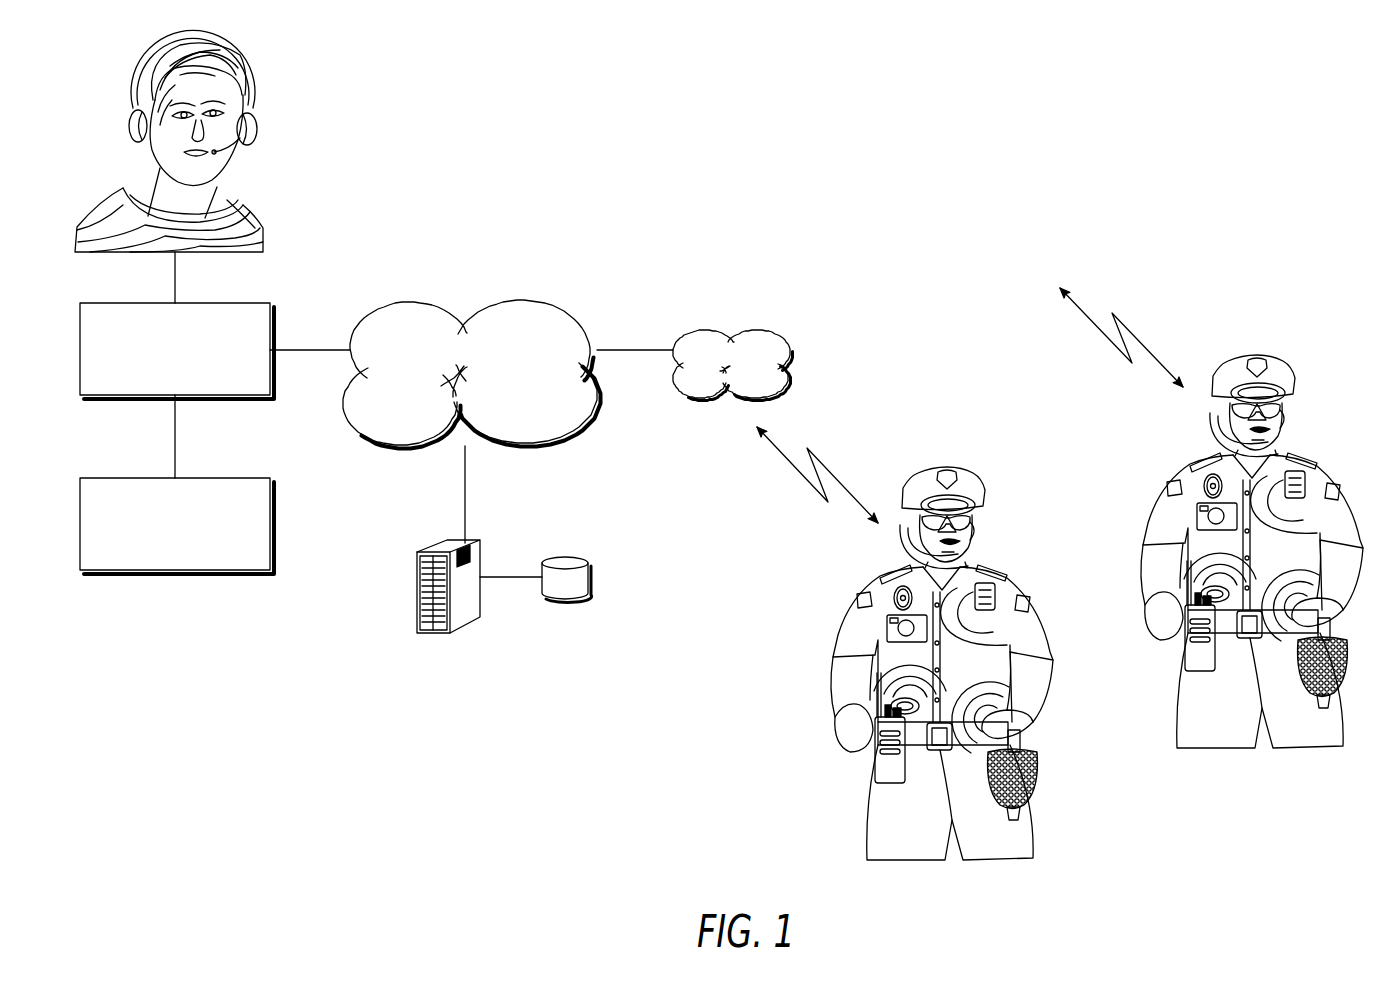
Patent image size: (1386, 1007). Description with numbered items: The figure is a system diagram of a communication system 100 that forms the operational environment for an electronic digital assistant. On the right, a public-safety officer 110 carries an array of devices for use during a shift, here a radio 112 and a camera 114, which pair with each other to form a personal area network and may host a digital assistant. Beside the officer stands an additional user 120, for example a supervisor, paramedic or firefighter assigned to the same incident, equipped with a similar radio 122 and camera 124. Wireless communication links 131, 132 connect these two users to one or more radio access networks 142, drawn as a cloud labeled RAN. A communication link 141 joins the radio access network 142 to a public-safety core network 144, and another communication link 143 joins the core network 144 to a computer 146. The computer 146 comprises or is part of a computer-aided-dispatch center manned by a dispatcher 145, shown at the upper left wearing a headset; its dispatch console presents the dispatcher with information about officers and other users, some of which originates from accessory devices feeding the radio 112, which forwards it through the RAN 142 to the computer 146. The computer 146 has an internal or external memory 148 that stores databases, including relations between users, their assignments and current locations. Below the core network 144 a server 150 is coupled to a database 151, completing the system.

The communication system 100 is at (1276, 106).
The public-safety officer 110 is at (910, 663).
The radio 112 is at (883, 770).
The camera 114 is at (880, 618).
The additional user 120 is at (1219, 551).
The radio 122 is at (1196, 660).
The camera 124 is at (1190, 506).
The communication link 131 is at (788, 460).
The communication link 132 is at (1082, 311).
The communication link 141 is at (636, 349).
The radio access network 142 is at (760, 332).
The communication link 143 is at (322, 345).
The public-safety core network 144 is at (508, 300).
The dispatcher 145 is at (257, 126).
The computer 146 is at (220, 397).
The memory 148 is at (235, 572).
The server 150 is at (432, 548).
The database 151 is at (568, 558).